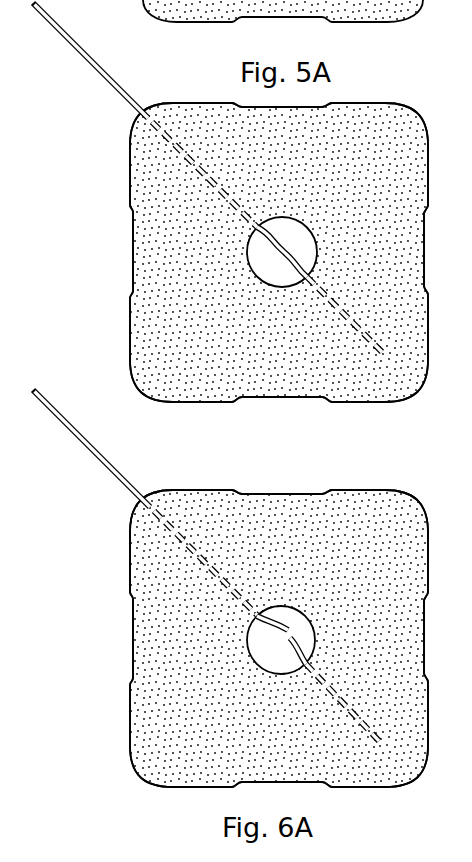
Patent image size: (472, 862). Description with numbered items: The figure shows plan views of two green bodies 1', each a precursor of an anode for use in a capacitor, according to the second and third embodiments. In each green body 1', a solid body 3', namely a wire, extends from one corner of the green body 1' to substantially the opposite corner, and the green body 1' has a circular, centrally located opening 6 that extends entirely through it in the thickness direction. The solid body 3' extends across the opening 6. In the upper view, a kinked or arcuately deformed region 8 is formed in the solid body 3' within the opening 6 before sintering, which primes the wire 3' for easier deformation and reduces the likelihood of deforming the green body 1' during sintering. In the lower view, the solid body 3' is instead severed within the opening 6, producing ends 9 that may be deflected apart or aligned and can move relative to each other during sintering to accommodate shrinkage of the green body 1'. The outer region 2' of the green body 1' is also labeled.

In FIG. 5A, the green body 1' is at (253, 252).
In FIG. 6A, the green body 1' is at (254, 638).
In FIG. 5A, the outer skin 2' is at (250, 252).
In FIG. 6A, the outer skin 2' is at (250, 638).
In FIG. 5A, the solid body 3' is at (203, 179).
In FIG. 6A, the solid body 3' is at (201, 566).
In FIG. 5A, the opening 6 is at (246, 241).
In FIG. 6A, the opening 6 is at (247, 635).
In FIG. 5A, the kinked or arcuately deformed region 8 is at (279, 253).
In FIG. 6A, the ends 9 is at (287, 630).